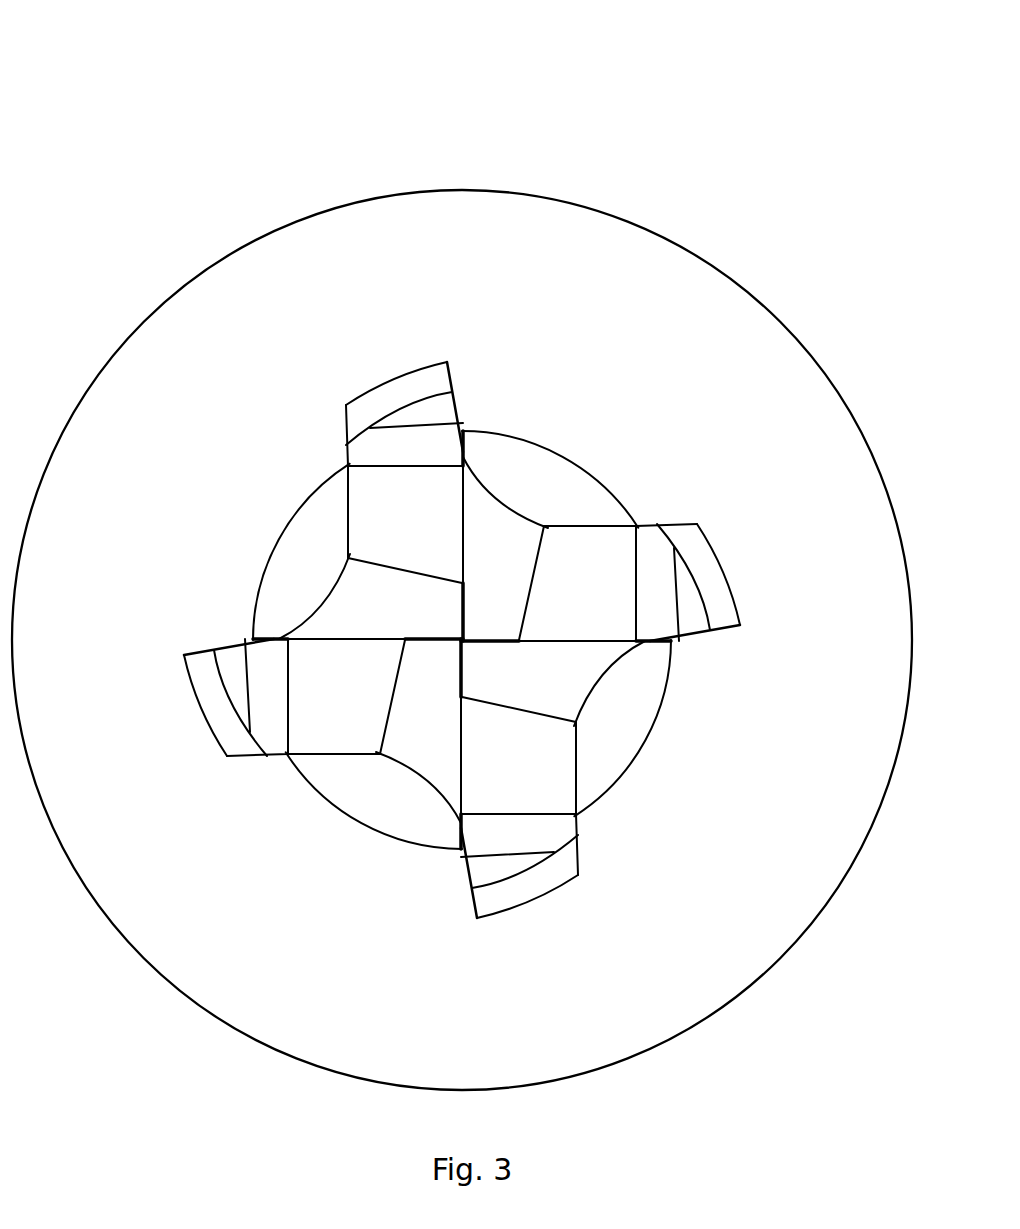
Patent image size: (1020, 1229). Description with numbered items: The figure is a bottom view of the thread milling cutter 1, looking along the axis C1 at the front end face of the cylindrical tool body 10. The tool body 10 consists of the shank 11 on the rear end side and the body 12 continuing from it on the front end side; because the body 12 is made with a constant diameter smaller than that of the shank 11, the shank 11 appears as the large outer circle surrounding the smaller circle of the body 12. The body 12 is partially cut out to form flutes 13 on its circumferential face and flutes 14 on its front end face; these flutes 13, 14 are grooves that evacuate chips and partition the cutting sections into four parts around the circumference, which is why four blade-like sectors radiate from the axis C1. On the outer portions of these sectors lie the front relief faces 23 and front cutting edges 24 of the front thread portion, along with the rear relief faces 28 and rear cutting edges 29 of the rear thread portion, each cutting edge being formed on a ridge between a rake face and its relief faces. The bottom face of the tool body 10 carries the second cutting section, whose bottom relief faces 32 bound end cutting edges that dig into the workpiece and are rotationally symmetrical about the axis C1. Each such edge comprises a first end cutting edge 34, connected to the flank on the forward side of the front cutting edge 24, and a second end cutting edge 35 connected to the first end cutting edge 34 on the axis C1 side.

The thread milling cutter 1 is at (813, 75).
The tool body 10 is at (783, 173).
The shank 11 is at (713, 312).
The body 12 is at (600, 447).
The flutes 13 is at (330, 530).
The flutes 14 is at (462, 752).
The front relief faces 23 is at (430, 413).
The front cutting edges 24 is at (460, 408).
The rear relief faces 28 is at (372, 405).
The rear cutting edges 29 is at (455, 375).
The bottom relief faces 32 is at (367, 495).
The first end cutting edge 34 is at (467, 458).
The second end cutting edge 35 is at (467, 505).
The axis C1 is at (482, 617).